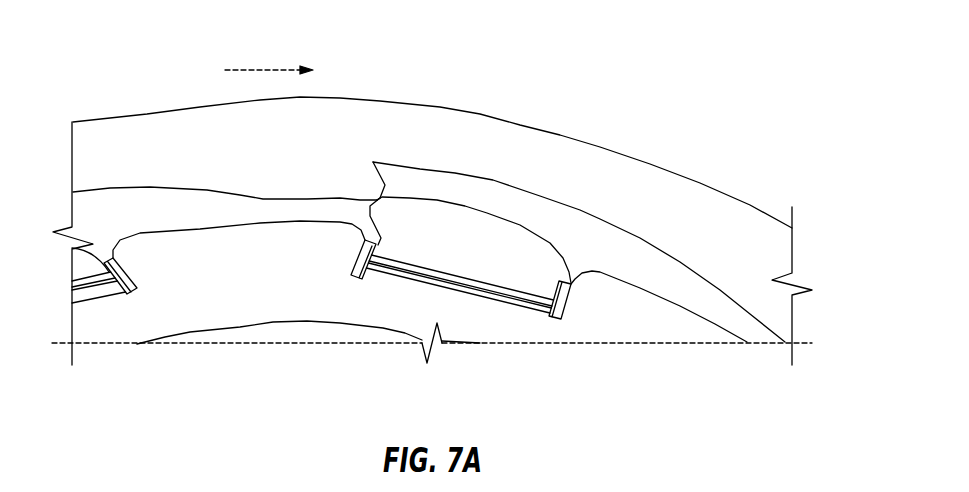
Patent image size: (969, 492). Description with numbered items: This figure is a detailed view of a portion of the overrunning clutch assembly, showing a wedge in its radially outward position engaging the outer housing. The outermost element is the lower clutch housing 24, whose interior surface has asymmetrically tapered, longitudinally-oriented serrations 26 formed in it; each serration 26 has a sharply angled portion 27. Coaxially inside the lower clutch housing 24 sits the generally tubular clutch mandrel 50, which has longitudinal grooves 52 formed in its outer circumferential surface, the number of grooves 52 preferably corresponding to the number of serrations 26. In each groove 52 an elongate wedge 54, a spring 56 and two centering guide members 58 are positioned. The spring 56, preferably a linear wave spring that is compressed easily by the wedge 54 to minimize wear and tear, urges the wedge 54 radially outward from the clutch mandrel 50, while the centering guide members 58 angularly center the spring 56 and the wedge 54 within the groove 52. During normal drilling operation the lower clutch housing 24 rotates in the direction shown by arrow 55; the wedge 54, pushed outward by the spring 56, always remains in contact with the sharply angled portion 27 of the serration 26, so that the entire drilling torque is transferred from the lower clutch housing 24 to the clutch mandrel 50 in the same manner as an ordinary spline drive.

The lower clutch housing 24 is at (643, 160).
The serrations 26 is at (455, 173).
The sharply angled portion 27 is at (382, 197).
The wedge 54 is at (488, 217).
The grooves 52 is at (383, 283).
The clutch mandrel 50 is at (284, 305).
The centering guide members 58 is at (365, 260).
The spring 56 is at (535, 313).
The arrow 55 is at (267, 72).